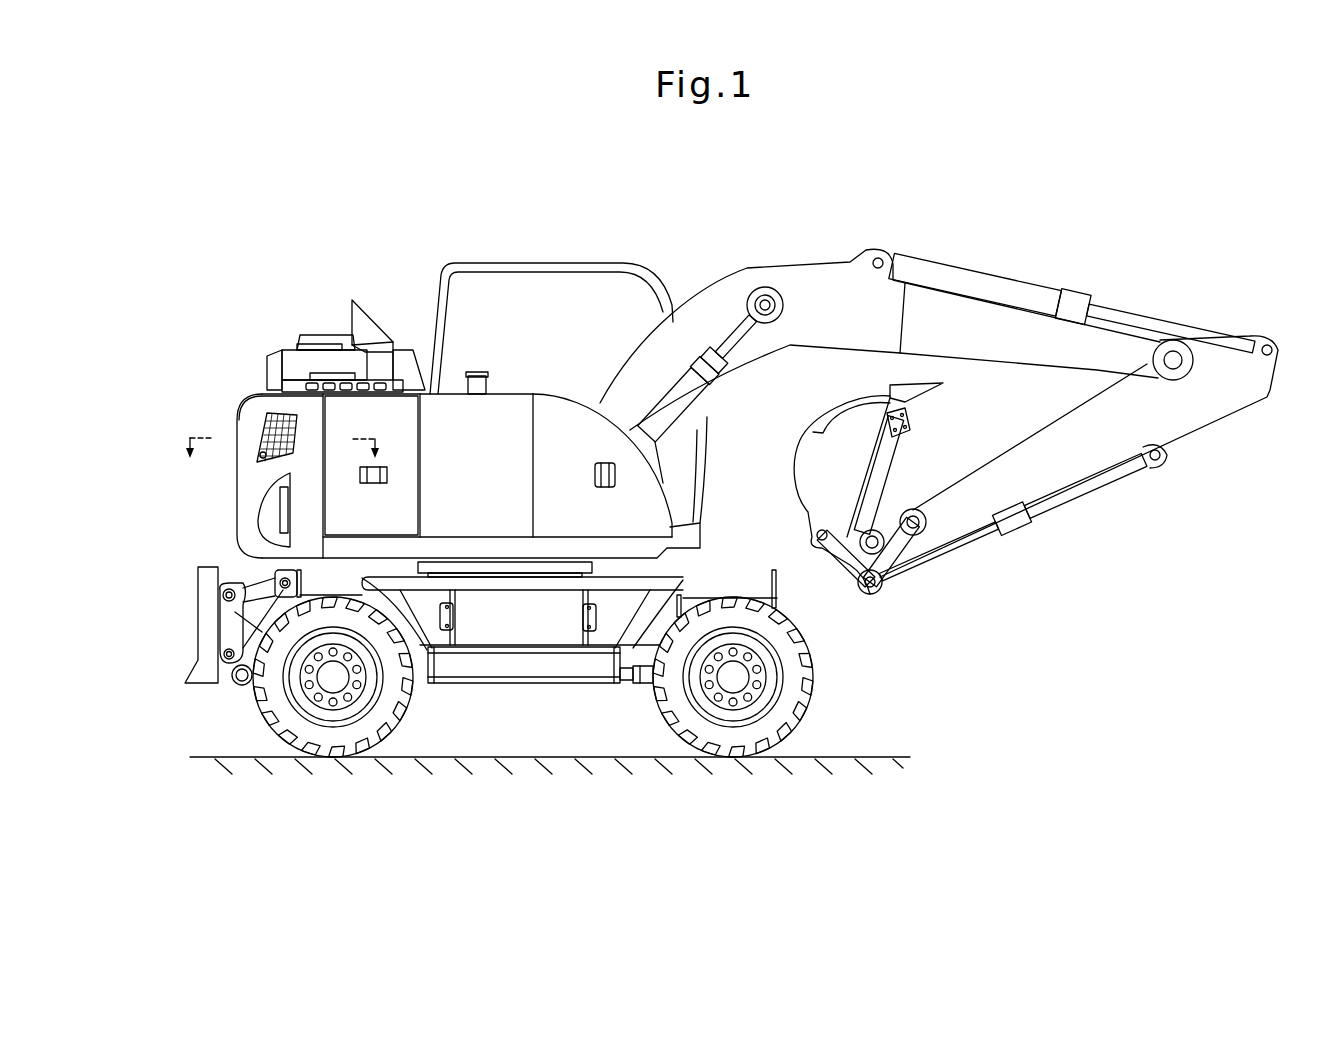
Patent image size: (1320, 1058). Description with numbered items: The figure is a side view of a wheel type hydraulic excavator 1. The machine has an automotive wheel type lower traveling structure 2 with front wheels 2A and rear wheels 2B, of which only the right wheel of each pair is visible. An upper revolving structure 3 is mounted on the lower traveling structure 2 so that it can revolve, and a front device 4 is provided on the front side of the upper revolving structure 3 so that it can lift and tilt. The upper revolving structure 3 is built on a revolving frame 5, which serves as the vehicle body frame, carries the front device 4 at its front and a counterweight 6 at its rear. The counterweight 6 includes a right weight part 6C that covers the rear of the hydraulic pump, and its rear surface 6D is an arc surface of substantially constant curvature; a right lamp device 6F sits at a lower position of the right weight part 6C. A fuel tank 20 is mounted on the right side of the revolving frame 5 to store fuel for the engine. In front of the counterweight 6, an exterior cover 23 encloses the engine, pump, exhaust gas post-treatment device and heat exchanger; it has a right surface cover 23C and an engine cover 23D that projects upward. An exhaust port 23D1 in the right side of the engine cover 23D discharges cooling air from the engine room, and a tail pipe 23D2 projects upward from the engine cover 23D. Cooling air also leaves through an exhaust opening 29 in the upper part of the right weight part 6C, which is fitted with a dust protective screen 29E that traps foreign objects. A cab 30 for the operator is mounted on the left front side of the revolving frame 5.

The wheel type hydraulic excavator 1 is at (630, 216).
The lower traveling structure 2 is at (515, 627).
The front wheels 2A is at (735, 738).
The rear wheels 2B is at (335, 737).
The upper revolving structure 3 is at (482, 242).
The front device 4 is at (837, 295).
The revolving frame 5 is at (655, 548).
The counterweight 6 is at (245, 475).
The right weight part 6C is at (283, 403).
The rear surface 6D is at (230, 495).
The right lamp device 6F is at (283, 505).
The fuel tank 20 is at (509, 410).
The exterior cover 23 is at (290, 357).
The right surface cover 23C is at (353, 515).
The engine cover 23D is at (328, 350).
The exhaust port 23D1 is at (303, 382).
The tail pipe 23D2 is at (368, 325).
The exhaust opening 29 is at (260, 450).
The dust protective screen 29E is at (263, 430).
The cab 30 is at (557, 285).